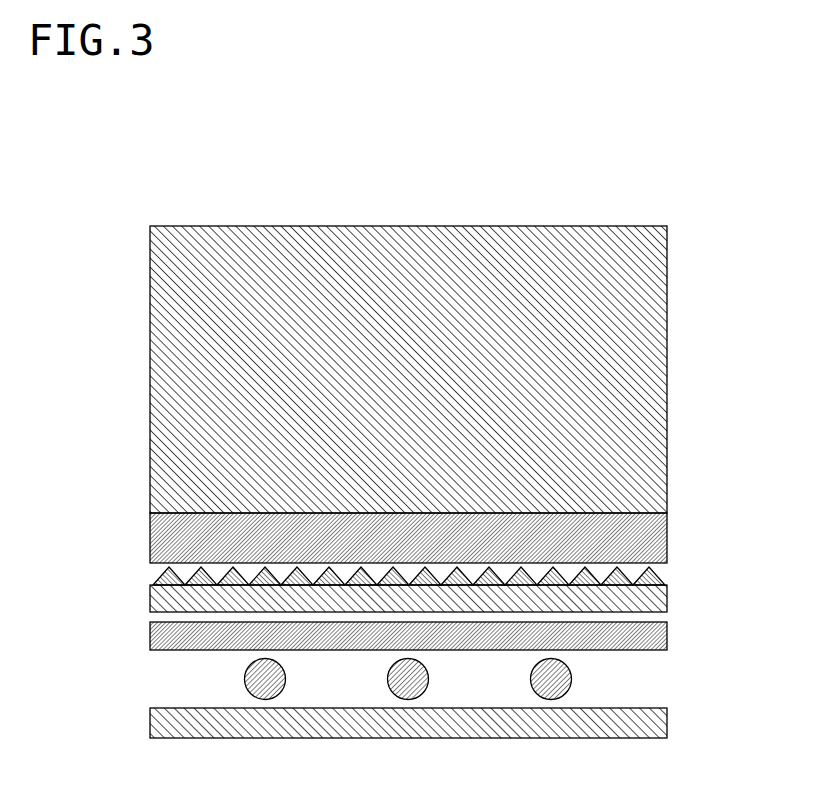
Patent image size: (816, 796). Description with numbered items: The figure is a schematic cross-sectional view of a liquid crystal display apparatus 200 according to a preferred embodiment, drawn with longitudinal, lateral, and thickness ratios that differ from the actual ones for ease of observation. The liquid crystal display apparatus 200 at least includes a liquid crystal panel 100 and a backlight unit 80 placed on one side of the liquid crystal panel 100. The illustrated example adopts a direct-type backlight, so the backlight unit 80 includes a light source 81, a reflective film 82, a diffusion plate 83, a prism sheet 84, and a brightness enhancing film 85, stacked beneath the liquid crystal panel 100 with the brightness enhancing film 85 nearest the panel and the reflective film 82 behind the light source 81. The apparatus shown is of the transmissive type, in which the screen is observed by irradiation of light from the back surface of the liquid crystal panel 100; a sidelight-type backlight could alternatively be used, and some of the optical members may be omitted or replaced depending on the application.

The liquid crystal display apparatus 200 is at (636, 203).
The liquid crystal panel 100 is at (642, 370).
The backlight unit 80 is at (683, 515).
The brightness enhancing film 85 is at (167, 542).
The prism sheet 84 is at (167, 602).
The diffusion plate 83 is at (167, 637).
The light source 81 is at (258, 680).
The reflective film 82 is at (167, 727).